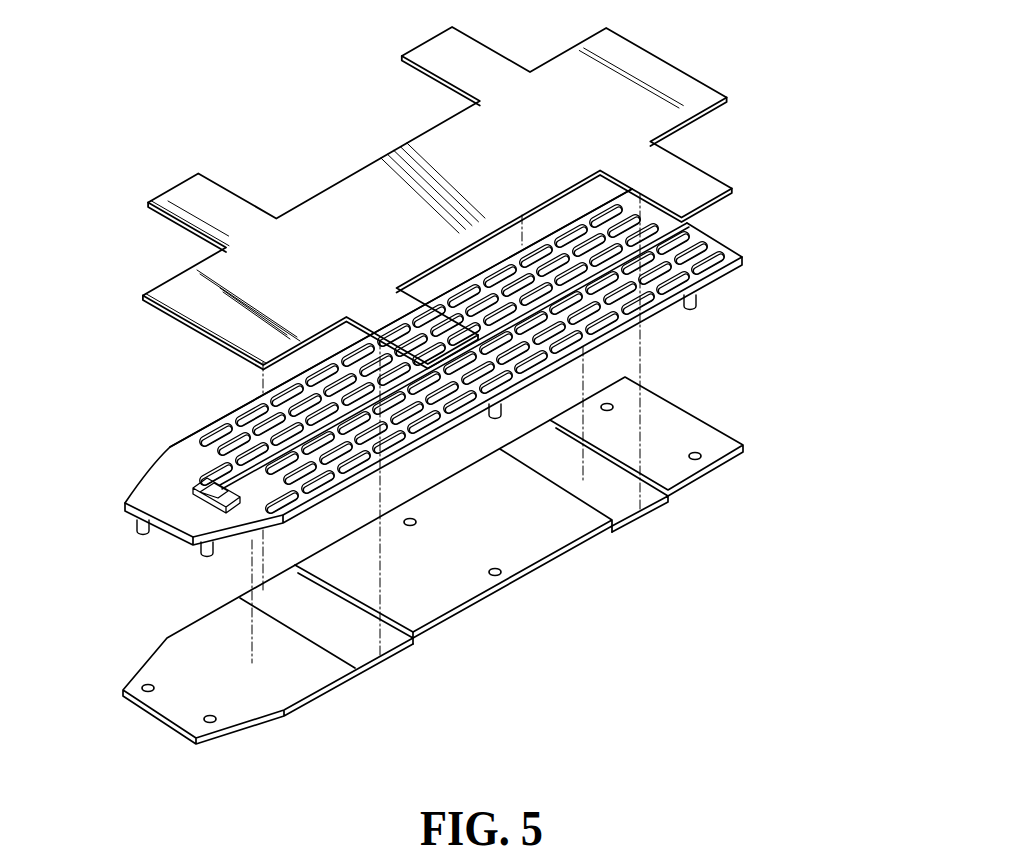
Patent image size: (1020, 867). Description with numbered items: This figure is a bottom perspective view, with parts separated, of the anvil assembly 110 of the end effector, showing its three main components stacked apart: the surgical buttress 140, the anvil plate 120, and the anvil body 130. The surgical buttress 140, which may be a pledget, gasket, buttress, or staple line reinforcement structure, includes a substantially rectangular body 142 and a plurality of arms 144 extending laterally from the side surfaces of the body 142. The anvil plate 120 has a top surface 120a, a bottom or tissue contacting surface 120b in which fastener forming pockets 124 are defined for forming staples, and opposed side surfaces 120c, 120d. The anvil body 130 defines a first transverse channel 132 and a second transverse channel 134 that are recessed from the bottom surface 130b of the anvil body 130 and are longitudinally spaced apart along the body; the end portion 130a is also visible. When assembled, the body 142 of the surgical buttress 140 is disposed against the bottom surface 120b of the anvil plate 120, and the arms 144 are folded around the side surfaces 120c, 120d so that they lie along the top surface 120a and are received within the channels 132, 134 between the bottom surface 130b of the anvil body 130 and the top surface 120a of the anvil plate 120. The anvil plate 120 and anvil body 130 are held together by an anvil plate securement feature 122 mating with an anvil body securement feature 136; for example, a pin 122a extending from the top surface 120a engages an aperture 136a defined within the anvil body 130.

The anvil assembly 110 is at (305, 107).
The anvil plate 120 is at (424, 393).
The top surface of anvil plate 120a is at (655, 312).
The bottom or tissue contacting surface of anvil plate 120b is at (147, 498).
The side surface of anvil plate 120c is at (645, 332).
The side surface of anvil plate 120d is at (210, 427).
The anvil plate securement feature 122 is at (197, 562).
The pin 122a is at (703, 300).
The fastener forming pockets 124 is at (703, 262).
The anvil body 130 is at (429, 574).
The end portion of base plate 130a is at (245, 736).
The bottom surface of anvil body 130b is at (457, 592).
The first transverse channel 132 is at (350, 645).
The second transverse channel 134 is at (614, 503).
The anvil body securement feature 136 is at (673, 428).
The aperture 136a is at (612, 404).
The surgical buttress 140 is at (173, 290).
The body 142 is at (652, 76).
The arms 144 is at (190, 200).